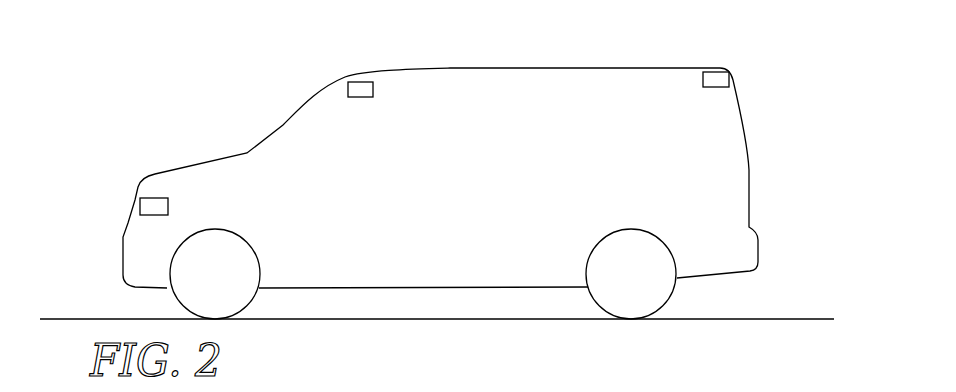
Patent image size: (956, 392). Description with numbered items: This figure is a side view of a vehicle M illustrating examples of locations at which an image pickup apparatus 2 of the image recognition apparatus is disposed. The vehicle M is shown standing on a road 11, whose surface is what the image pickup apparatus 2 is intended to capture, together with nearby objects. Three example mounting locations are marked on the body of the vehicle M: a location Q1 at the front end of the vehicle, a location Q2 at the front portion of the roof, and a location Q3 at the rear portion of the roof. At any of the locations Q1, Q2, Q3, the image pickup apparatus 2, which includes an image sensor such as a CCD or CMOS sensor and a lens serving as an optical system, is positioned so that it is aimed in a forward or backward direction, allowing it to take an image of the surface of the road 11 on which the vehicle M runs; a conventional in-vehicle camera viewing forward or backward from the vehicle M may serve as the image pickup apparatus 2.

The vehicle M is at (285, 123).
The image pickup apparatus 2 is at (419, 122).
The location Q1 is at (153, 207).
The location Q2 is at (362, 87).
The location Q3 is at (715, 78).
The road 11 is at (775, 317).